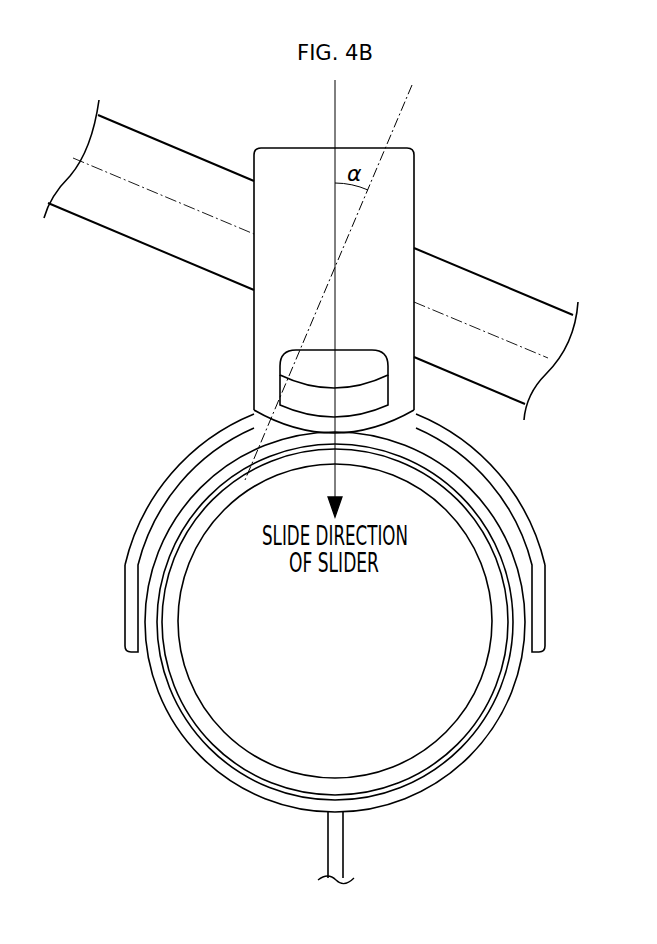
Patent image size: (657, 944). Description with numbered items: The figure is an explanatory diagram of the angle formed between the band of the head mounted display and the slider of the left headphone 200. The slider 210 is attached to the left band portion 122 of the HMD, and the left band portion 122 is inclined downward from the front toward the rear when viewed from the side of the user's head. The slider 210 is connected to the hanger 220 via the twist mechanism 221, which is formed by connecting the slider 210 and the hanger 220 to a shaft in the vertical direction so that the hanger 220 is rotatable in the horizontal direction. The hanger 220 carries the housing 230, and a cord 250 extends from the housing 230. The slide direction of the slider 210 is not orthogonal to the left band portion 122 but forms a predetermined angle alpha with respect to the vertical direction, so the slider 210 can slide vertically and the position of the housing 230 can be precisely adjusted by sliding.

The left band portion 122 is at (180, 148).
The left headphone 200 is at (562, 492).
The slider 210 is at (254, 330).
The hanger 220 is at (200, 450).
The twist mechanism 221 is at (280, 364).
The housing 230 is at (470, 762).
The cord 250 is at (345, 849).